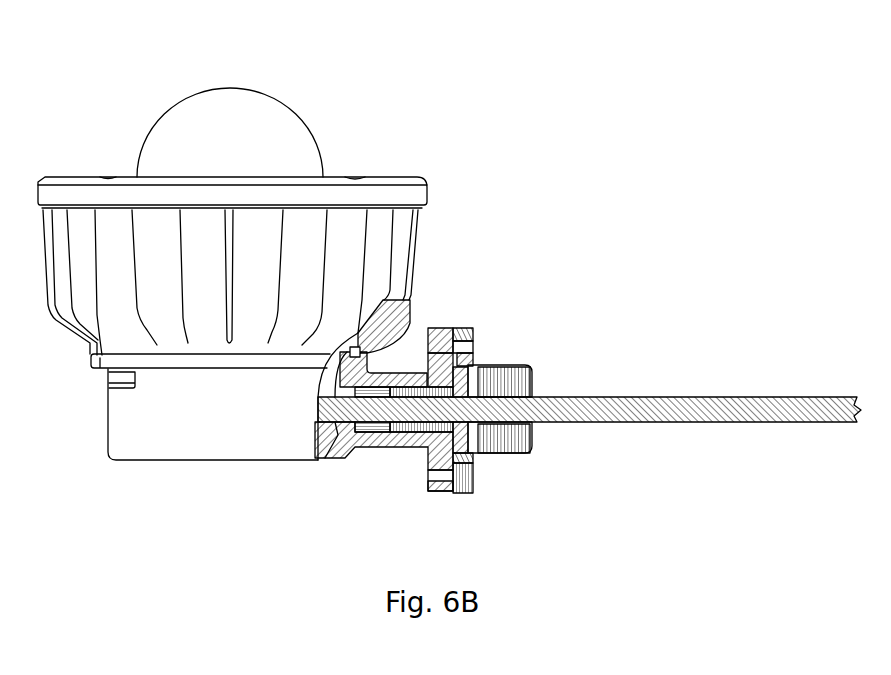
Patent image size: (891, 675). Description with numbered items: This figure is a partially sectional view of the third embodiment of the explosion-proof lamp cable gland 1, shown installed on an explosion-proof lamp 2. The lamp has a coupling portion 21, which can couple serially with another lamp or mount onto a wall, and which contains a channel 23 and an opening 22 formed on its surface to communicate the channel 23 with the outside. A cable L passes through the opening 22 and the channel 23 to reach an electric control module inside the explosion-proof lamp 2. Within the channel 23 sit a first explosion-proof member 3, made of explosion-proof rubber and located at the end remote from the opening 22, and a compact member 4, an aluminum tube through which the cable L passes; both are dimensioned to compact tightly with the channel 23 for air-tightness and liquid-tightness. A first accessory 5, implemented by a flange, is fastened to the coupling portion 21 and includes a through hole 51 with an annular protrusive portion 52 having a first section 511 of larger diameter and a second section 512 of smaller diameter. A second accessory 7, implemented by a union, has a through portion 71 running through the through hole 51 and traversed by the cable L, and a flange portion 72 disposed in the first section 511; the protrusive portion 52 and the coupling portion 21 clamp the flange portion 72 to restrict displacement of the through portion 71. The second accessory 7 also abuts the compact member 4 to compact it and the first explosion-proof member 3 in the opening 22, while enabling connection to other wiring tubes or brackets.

The explosion-proof lamp cable gland 1 is at (484, 306).
The explosion-proof lamp 2 is at (97, 80).
The first explosion-proof member 3 is at (376, 434).
The compact member 4 is at (413, 434).
The first accessory 5 is at (458, 332).
The second accessory 7 is at (537, 357).
The coupling portion 21 is at (437, 327).
The opening 22 is at (442, 374).
The channel 23 is at (389, 436).
The through hole 51 is at (492, 540).
The protrusive portion 52 is at (476, 462).
The through portion 71 is at (502, 368).
The flange portion 72 is at (464, 366).
The first section 511 is at (452, 482).
The second section 512 is at (467, 472).
The cable L is at (637, 410).